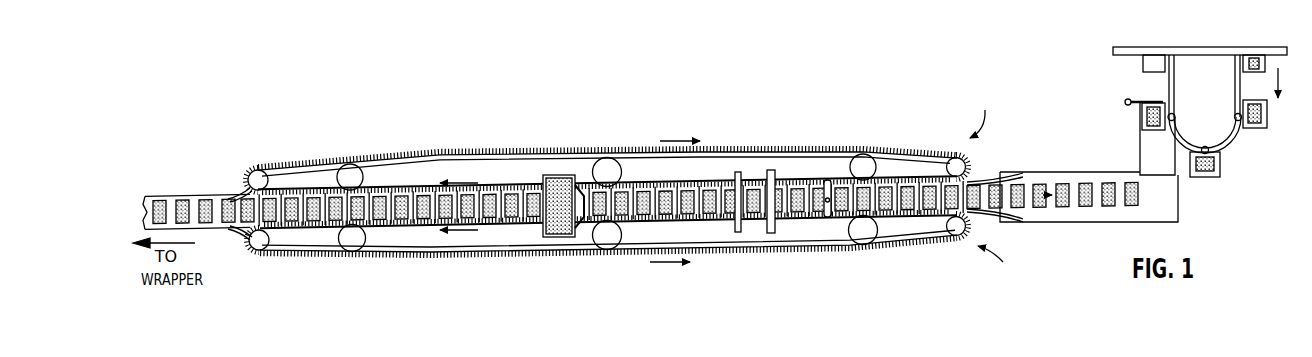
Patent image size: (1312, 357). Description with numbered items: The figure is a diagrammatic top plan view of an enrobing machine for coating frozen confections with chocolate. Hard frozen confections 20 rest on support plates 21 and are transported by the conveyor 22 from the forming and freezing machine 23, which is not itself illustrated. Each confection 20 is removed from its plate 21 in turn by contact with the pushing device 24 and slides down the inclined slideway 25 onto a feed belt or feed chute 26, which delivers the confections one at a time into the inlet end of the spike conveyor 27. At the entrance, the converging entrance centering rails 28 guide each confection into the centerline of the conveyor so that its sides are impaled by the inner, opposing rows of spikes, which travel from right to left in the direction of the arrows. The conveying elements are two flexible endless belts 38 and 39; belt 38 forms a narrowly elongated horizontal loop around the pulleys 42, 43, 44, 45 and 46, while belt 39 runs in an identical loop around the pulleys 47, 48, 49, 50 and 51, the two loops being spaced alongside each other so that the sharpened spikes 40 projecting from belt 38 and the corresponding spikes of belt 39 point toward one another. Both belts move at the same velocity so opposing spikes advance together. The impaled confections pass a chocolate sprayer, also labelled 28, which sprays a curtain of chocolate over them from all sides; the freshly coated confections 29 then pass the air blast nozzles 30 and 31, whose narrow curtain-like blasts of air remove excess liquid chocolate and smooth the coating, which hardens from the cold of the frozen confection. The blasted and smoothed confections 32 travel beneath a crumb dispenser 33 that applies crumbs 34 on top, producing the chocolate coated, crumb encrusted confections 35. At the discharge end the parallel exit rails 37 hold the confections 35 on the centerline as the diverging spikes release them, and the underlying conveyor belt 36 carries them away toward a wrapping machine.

The hard frozen confection 20 is at (890, 213).
The support plate 21 is at (1267, 116).
The conveyor 22 is at (1237, 114).
The forming and freezing machine 23 is at (1198, 64).
The pushing device 24 is at (1128, 99).
The inclined slideway 25 is at (1140, 152).
The feed belt or feed chute 26 is at (1062, 173).
The spike conveyor 27 is at (994, 185).
The converging entrance centering rails 28 is at (828, 178).
The freshly coated impaled confection 29 is at (794, 215).
The air blast nozzle 30 is at (770, 229).
The air blast nozzle 31 is at (735, 228).
The blasted and smoothed confection 32 is at (663, 216).
The crumb dispenser 33 is at (541, 181).
The crumbs 34 is at (570, 238).
The encrusted confection 35 is at (226, 214).
The conveyor belt 36 is at (196, 201).
The parallel exit rails 37 is at (247, 193).
The endless belt 38 is at (712, 159).
The endless belt 39 is at (512, 222).
The spikes 40 is at (776, 150).
The pulley 42 is at (260, 176).
The pulley 43 is at (349, 174).
The pulley 44 is at (605, 168).
The pulley 45 is at (862, 165).
The pulley 46 is at (954, 160).
The pulley 47 is at (259, 244).
The pulley 48 is at (352, 245).
The pulley 49 is at (607, 244).
The pulley 50 is at (863, 242).
The pulley 51 is at (957, 238).